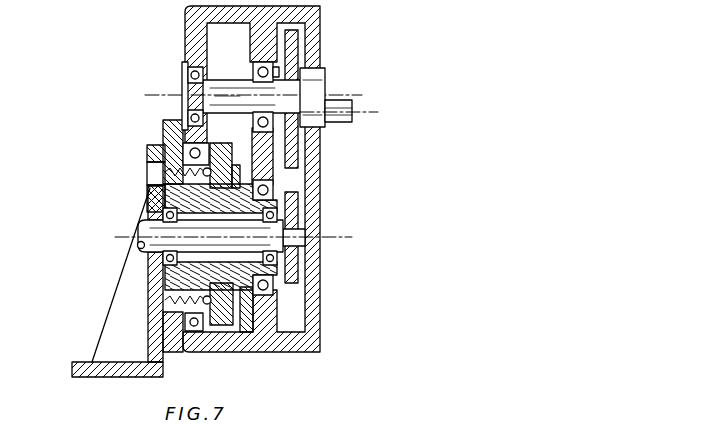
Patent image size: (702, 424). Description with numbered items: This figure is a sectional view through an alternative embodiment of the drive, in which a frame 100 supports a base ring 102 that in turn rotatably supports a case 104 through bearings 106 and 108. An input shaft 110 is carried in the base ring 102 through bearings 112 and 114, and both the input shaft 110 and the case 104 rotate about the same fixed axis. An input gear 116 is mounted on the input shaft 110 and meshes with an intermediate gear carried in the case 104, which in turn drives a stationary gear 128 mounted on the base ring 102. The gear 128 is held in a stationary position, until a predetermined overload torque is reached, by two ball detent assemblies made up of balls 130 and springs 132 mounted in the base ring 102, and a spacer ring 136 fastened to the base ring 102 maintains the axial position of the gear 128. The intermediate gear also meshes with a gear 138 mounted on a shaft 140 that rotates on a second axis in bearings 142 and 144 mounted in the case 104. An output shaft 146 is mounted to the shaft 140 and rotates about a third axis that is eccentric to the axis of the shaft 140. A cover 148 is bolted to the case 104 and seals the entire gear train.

The frame 100 is at (105, 365).
The base ring 102 is at (165, 330).
The case 104 is at (218, 355).
The bearing 106 is at (197, 334).
The bearing 108 is at (268, 290).
The input shaft 110 is at (140, 243).
The bearing 112 is at (165, 260).
The bearing 114 is at (302, 273).
The input gear 116 is at (295, 256).
The stationary gear 128 is at (188, 126).
The ball 130 is at (165, 146).
The spring 132 is at (147, 158).
The spacer ring 136 is at (238, 313).
The gear 138 is at (298, 42).
The shaft 140 is at (225, 82).
The bearing 142 is at (190, 74).
The bearing 144 is at (320, 88).
The output shaft 146 is at (355, 123).
The cover 148 is at (312, 170).